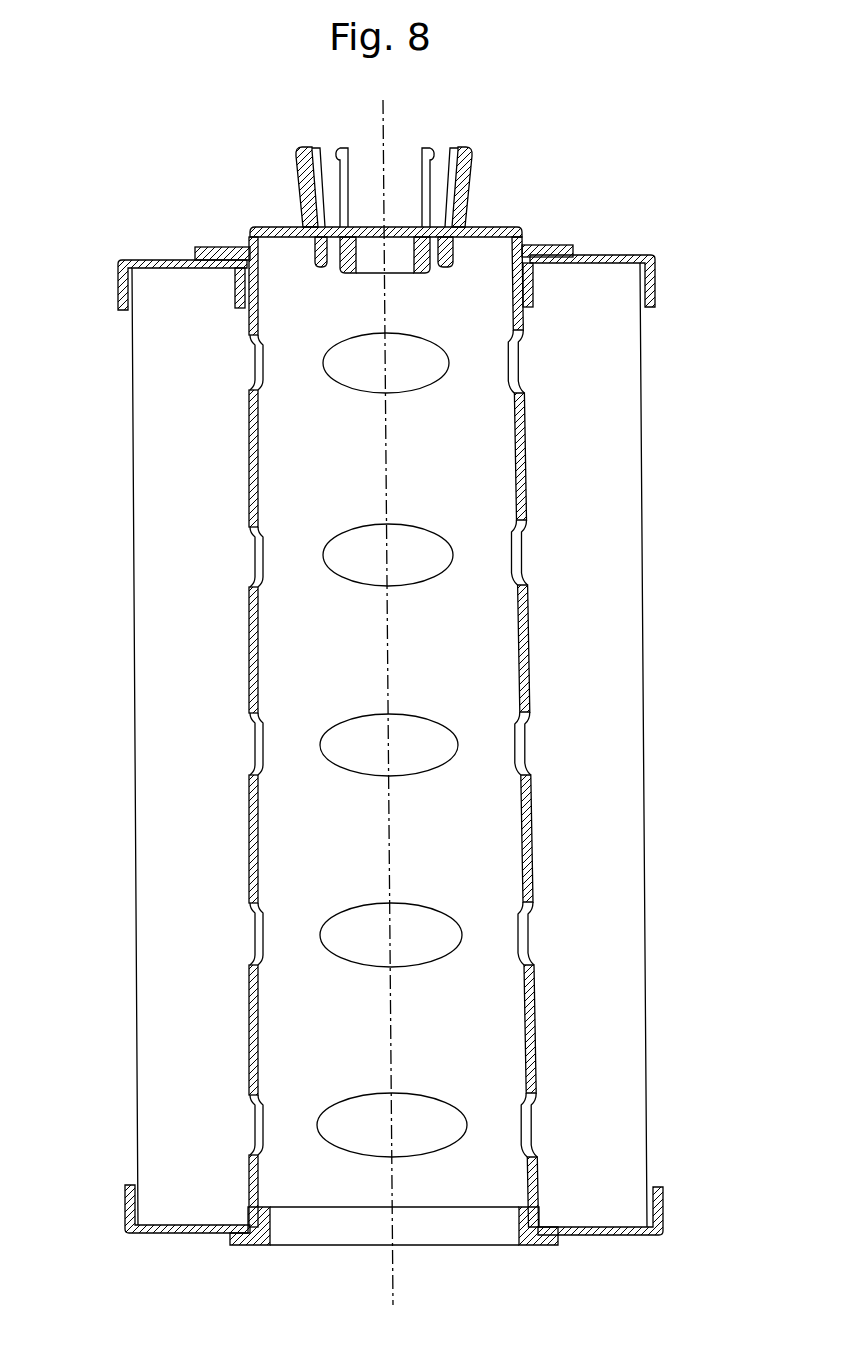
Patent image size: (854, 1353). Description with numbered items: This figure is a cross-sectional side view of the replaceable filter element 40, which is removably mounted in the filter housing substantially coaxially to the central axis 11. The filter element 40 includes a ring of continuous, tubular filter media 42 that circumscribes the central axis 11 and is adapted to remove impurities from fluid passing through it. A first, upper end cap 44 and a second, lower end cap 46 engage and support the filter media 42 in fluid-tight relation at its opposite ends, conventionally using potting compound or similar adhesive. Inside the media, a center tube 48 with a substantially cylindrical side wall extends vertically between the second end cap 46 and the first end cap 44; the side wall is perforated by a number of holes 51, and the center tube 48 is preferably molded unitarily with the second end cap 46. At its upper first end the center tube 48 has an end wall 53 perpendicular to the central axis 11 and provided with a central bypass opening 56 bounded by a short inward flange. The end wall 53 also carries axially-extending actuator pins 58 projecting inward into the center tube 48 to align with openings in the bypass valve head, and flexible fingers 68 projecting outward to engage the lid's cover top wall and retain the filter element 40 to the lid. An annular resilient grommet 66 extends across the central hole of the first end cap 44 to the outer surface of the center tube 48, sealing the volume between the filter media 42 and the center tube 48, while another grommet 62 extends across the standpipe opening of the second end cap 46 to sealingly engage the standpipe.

The central axis 11 is at (396, 1282).
The filter element 40 is at (699, 549).
The filter media 42 is at (628, 855).
The first end cap 44 is at (110, 289).
The second end cap 46 is at (144, 1242).
The center tube 48 is at (240, 821).
The holes 51 is at (253, 383).
The end wall 53 is at (486, 225).
The bypass opening 56 is at (370, 264).
The actuator pins 58 is at (316, 253).
The grommet 62 is at (247, 1247).
The grommet 66 is at (565, 244).
The fingers 68 is at (370, 158).